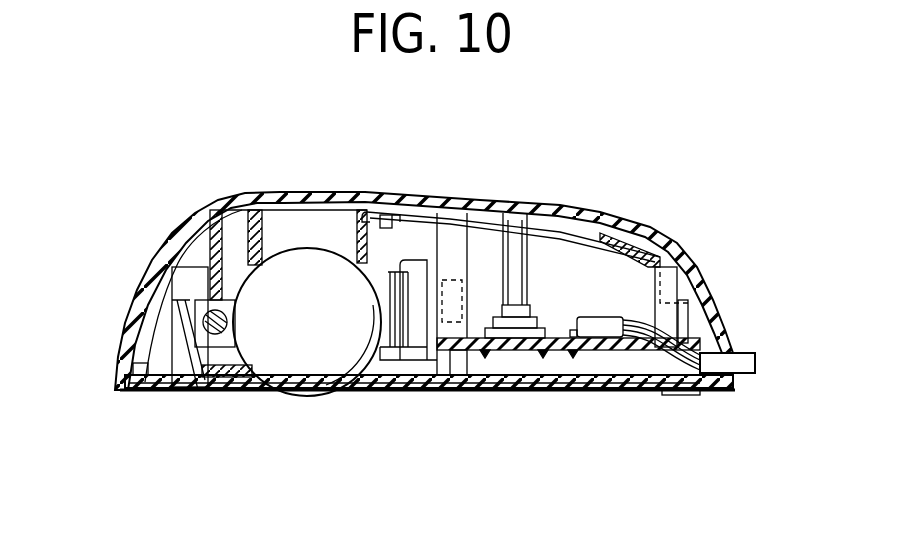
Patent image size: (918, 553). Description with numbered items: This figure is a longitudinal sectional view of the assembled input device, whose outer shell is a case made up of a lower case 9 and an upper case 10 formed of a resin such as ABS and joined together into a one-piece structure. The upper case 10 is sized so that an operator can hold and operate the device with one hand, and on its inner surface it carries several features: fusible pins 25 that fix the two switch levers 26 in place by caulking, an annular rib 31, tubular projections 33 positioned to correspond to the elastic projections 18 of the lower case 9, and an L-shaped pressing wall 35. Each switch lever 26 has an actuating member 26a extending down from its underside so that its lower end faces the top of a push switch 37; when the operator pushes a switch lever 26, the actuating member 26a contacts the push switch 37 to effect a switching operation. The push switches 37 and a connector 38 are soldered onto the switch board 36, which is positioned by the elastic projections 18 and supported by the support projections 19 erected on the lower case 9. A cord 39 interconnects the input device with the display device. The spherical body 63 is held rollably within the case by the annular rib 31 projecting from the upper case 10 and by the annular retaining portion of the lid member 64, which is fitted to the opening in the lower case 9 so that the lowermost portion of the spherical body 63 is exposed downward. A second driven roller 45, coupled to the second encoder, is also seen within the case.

The upper case 10 is at (223, 197).
The switch lever 26 is at (667, 224).
The actuating member 26a is at (557, 222).
The annular rib 31 is at (265, 243).
The fusible pin 25 is at (405, 224).
The L-shaped pressing wall 35 is at (172, 275).
The second driven roller 45 is at (222, 308).
The spherical body 63 is at (297, 373).
The lid member 64 is at (343, 384).
The tubular projection 33 is at (472, 257).
The push switch 37 is at (560, 303).
The connector 38 is at (600, 337).
The support projection 19 is at (523, 352).
The elastic projection 18 is at (458, 358).
The lower case 9 is at (651, 393).
The switch board 36 is at (473, 378).
The cord 39 is at (747, 378).